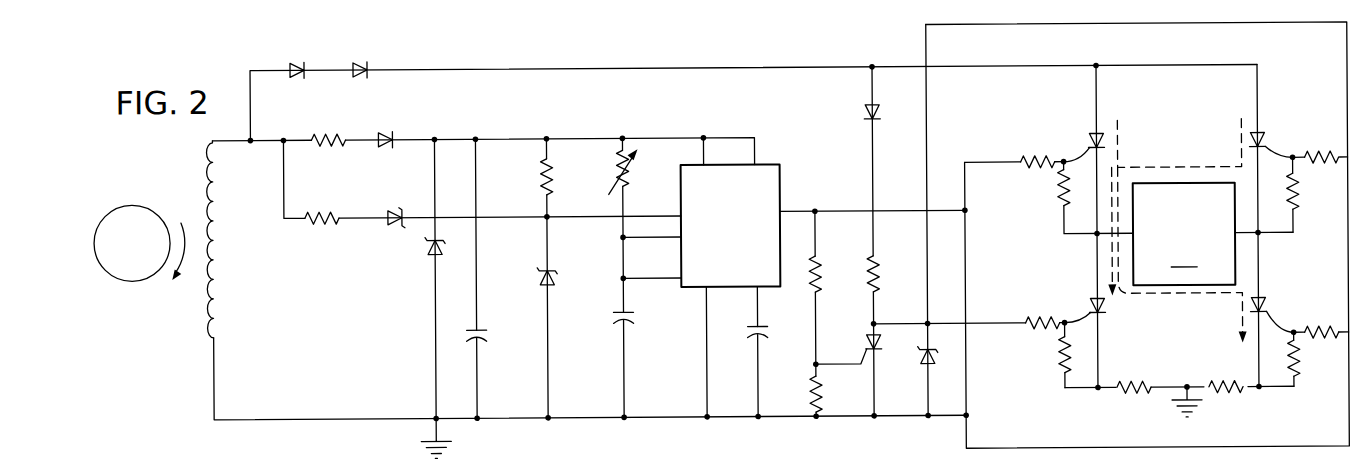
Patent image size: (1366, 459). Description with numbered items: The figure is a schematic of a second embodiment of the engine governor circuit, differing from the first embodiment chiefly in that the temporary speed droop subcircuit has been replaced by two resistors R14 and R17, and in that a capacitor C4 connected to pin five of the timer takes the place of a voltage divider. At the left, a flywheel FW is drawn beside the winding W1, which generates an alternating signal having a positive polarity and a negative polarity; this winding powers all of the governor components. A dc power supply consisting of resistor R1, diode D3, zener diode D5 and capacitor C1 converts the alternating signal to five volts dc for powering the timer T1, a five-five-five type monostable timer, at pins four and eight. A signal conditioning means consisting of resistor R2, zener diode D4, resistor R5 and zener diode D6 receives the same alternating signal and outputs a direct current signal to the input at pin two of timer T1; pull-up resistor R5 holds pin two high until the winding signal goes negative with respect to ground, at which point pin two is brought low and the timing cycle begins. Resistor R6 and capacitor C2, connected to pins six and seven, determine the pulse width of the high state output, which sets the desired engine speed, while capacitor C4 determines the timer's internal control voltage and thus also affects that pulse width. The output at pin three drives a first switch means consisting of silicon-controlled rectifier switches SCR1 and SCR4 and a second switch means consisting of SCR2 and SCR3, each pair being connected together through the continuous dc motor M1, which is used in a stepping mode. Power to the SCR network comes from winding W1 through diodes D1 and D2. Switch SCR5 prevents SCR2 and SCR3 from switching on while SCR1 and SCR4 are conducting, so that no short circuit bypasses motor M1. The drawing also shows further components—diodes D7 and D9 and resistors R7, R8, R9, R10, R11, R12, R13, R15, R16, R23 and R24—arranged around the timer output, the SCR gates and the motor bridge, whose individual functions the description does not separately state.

The flywheel FW is at (126, 203).
The winding W1 is at (216, 283).
The diode D1 is at (297, 60).
The diode D2 is at (360, 60).
The diode D3 is at (386, 130).
The zener diode D4 is at (395, 208).
The zener diode D5 is at (428, 250).
The zener diode D6 is at (540, 281).
The zener diode D7 is at (918, 365).
The diode D9 is at (866, 113).
The resistor R1 is at (327, 130).
The resistor R2 is at (321, 224).
The resistor R5 is at (540, 176).
The resistor R6 is at (613, 168).
The resistor R7 is at (812, 282).
The resistor R8 is at (810, 395).
The resistor R9 is at (870, 284).
The resistor R10 is at (1036, 156).
The resistor R11 is at (1316, 328).
The resistor R12 is at (1058, 192).
The resistor R13 is at (1058, 355).
The resistor R14 is at (1140, 400).
The resistor R15 is at (1300, 196).
The resistor R16 is at (1302, 378).
The resistor R17 is at (1224, 400).
The resistor R23 is at (1318, 157).
The resistor R24 is at (1040, 320).
The capacitor C1 is at (488, 340).
The capacitor C2 is at (612, 322).
The capacitor C4 is at (756, 340).
The 555 timer T1 is at (779, 164).
The silicon-controlled rectifier switch SCR1 is at (1090, 140).
The silicon-controlled rectifier switch SCR2 is at (1262, 136).
The silicon-controlled rectifier switch SCR3 is at (1090, 305).
The silicon-controlled rectifier switch SCR4 is at (1262, 300).
The switch SCR5 is at (867, 348).
The dc motor M1 is at (1184, 234).